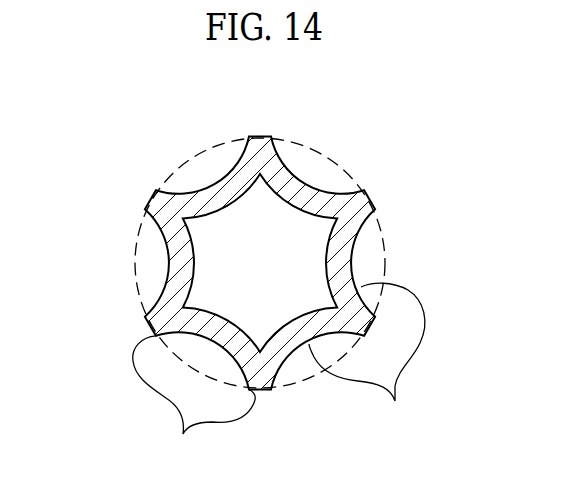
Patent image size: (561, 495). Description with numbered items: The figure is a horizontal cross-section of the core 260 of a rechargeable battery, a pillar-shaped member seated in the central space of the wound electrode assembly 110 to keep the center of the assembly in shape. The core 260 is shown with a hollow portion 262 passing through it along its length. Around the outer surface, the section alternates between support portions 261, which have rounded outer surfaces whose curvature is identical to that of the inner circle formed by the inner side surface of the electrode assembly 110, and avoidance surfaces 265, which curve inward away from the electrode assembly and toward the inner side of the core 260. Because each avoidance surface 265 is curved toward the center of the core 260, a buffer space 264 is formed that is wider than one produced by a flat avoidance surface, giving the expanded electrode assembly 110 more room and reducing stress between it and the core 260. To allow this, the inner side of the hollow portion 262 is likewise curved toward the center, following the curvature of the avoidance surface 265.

The electrode assembly 110 is at (388, 248).
The core 260 is at (280, 252).
The support portion 261 is at (194, 399).
The hollow portion 262 is at (287, 235).
The buffer space 264 is at (148, 264).
The avoidance surface 265 is at (367, 357).